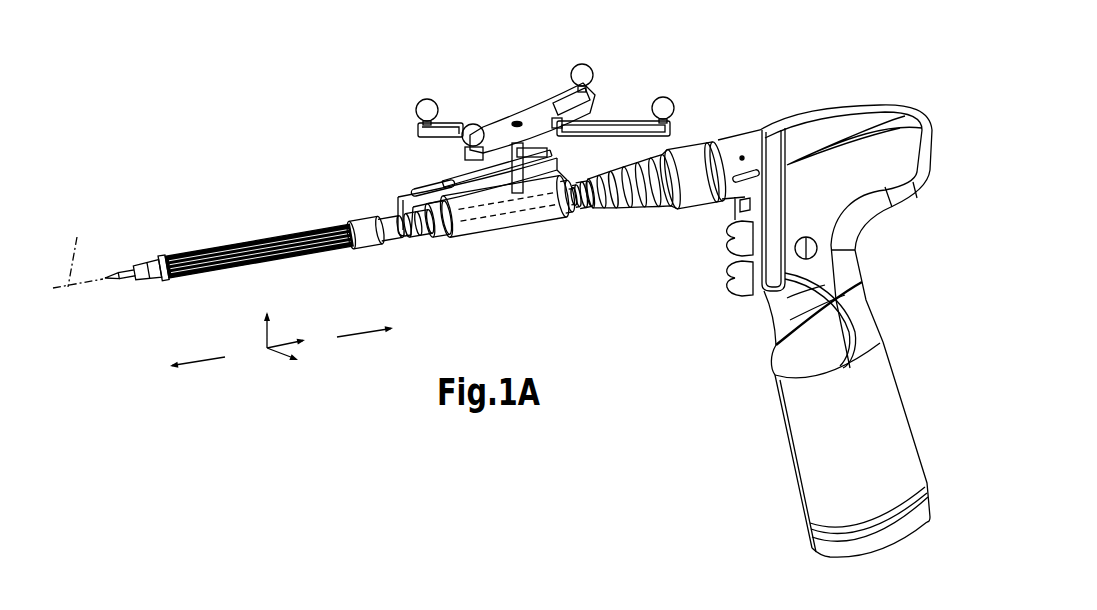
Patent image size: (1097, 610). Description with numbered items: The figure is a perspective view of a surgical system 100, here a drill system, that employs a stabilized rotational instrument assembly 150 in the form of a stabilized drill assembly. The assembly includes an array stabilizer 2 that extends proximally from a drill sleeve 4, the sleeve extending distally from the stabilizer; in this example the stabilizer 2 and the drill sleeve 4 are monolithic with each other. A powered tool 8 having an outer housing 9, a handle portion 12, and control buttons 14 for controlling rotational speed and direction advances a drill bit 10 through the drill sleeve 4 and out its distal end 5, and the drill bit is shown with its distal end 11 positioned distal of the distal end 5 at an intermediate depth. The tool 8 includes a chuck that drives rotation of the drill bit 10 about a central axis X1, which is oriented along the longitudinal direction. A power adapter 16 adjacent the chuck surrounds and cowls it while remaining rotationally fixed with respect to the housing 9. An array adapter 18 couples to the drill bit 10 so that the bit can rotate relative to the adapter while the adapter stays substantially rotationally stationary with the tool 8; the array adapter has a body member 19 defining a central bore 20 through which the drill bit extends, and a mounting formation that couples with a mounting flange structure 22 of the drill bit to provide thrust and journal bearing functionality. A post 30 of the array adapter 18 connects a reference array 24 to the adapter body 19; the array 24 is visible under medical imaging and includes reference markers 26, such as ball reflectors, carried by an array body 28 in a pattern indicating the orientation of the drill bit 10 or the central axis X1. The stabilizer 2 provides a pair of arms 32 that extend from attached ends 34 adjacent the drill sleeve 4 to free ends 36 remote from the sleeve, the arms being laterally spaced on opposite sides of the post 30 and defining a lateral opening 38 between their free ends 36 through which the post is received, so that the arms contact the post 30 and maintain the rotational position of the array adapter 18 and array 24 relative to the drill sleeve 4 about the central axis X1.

The array stabilizer 2 is at (472, 153).
The drill sleeve 4 is at (238, 242).
The distal end of drill sleeve 5 is at (113, 277).
The tool 8 is at (778, 301).
The outer housing 9 is at (930, 175).
The drill bit 10 is at (422, 232).
The distal end of drill bit 11 is at (100, 283).
The handle portion 12 is at (892, 372).
The control buttons 14 is at (727, 277).
The power adapter 16 is at (690, 135).
The array adapter 18 is at (503, 240).
The body member 19 is at (482, 232).
The central bore 20 is at (557, 224).
The mounting flange structure 22 is at (450, 238).
The reference array 24 is at (562, 82).
The reference markers 26 is at (471, 131).
The array body 28 is at (533, 112).
The post 30 is at (515, 155).
The arms 32 is at (457, 178).
The attached ends 34 is at (410, 190).
The free ends 36 is at (577, 213).
The lateral opening 38 is at (558, 152).
The surgical system 100 is at (513, 280).
The stabilized rotational instrument assembly 150 is at (513, 280).
The central axis X1 is at (78, 249).